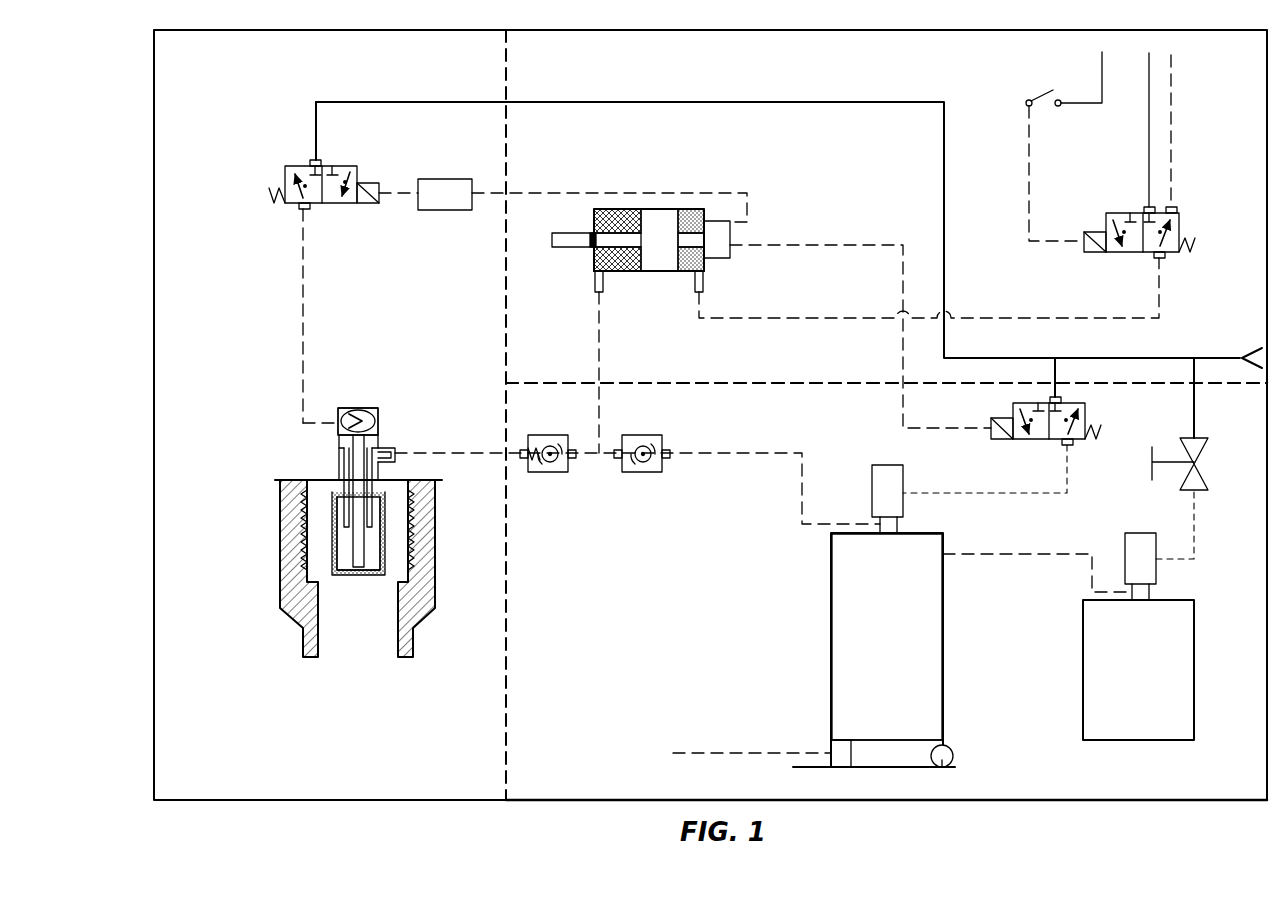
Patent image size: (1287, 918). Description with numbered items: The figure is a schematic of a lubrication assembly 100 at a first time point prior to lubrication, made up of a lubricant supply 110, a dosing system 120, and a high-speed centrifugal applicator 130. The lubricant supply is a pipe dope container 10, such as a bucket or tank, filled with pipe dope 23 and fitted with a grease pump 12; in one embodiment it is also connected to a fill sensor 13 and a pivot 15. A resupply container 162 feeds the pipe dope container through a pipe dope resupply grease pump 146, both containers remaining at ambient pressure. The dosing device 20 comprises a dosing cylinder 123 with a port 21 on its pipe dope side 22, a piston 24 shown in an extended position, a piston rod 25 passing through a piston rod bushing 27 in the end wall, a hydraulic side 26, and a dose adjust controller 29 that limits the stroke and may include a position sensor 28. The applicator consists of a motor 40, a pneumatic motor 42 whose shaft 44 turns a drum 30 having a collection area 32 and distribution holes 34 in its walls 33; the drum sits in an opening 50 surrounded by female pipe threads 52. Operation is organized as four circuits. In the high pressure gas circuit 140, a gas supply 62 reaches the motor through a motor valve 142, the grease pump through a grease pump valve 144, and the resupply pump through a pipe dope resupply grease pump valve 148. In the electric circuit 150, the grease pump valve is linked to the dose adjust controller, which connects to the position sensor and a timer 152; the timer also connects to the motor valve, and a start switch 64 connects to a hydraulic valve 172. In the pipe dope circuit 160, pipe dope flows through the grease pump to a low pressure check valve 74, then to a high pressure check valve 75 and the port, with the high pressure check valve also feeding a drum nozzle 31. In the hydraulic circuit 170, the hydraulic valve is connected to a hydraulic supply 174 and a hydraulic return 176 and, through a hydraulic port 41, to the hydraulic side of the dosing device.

The lubrication assembly 100 is at (245, 258).
The lubricant supply 110 is at (648, 640).
The dosing system 120 is at (662, 86).
The high-speed centrifugal applicator 130 is at (318, 443).
The pipe dope container 10 is at (943, 672).
The grease pump 12 is at (880, 465).
The fill sensor 13 is at (833, 748).
The pivot 15 is at (953, 752).
The dosing device 20 is at (625, 290).
The port 21 is at (596, 294).
The pipe dope side 22 is at (618, 209).
The pipe dope 23 is at (840, 685).
The piston 24 is at (655, 209).
The piston rod 25 is at (582, 232).
The hydraulic side 26 is at (692, 209).
The piston rod bushing 27 is at (592, 249).
The position sensor 28 is at (695, 250).
The dose adjust controller 29 is at (735, 242).
The dosing cylinder 123 is at (632, 273).
The hydraulic port 41 is at (702, 290).
The drum 30 is at (385, 505).
The drum nozzle 31 is at (340, 498).
The collection area 32 is at (368, 568).
The walls 33 is at (320, 530).
The distribution holes 34 is at (372, 535).
The motor 40 is at (362, 408).
The pneumatic motor 42 is at (378, 420).
The shaft 44 is at (364, 440).
The opening 50 is at (320, 480).
The female pipe threads 52 is at (305, 562).
The gas supply 62 is at (1246, 352).
The start switch 64 is at (1046, 90).
The low pressure check valve 74 is at (652, 472).
The high pressure check valve 75 is at (560, 472).
The high pressure gas circuit 140 is at (870, 102).
The motor valve 142 is at (285, 178).
The grease pump valve 144 is at (1085, 416).
The pipe dope resupply grease pump 146 is at (1140, 533).
The pipe dope resupply grease pump valve 148 is at (1198, 472).
The electric circuit 150 is at (902, 362).
The timer 152 is at (447, 179).
The pipe dope circuit 160 is at (802, 505).
The resupply container 162 is at (1194, 695).
The hydraulic circuit 170 is at (1096, 318).
The hydraulic valve 172 is at (1180, 225).
The hydraulic supply 174 is at (1149, 152).
The hydraulic return 176 is at (1172, 152).